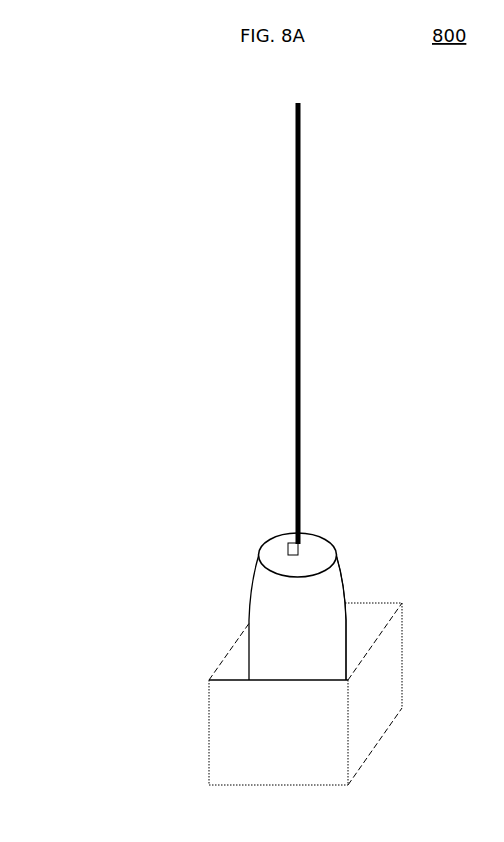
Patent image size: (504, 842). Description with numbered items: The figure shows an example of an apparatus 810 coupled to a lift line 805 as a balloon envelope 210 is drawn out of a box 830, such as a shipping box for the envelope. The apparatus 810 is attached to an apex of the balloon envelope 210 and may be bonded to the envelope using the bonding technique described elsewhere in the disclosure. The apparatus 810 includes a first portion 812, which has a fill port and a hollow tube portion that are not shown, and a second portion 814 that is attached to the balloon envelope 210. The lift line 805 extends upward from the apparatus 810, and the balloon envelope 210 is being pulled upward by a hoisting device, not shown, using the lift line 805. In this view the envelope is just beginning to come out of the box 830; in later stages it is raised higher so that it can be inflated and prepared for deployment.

The lift line 805 is at (301, 322).
The apparatus 810 is at (255, 527).
The first portion 812 is at (299, 548).
The second portion 814 is at (313, 560).
The balloon envelope 210 is at (345, 578).
The box 830 is at (405, 658).